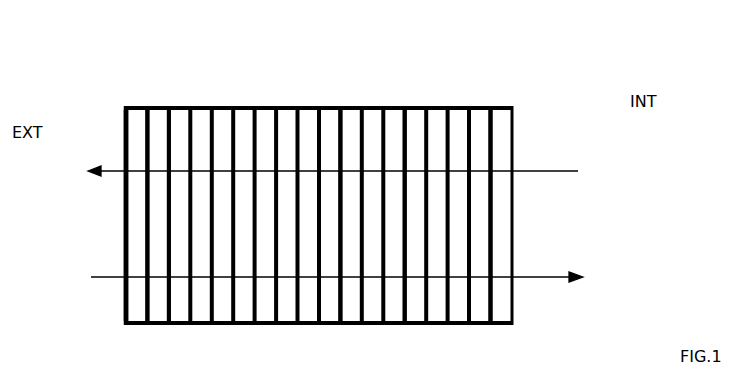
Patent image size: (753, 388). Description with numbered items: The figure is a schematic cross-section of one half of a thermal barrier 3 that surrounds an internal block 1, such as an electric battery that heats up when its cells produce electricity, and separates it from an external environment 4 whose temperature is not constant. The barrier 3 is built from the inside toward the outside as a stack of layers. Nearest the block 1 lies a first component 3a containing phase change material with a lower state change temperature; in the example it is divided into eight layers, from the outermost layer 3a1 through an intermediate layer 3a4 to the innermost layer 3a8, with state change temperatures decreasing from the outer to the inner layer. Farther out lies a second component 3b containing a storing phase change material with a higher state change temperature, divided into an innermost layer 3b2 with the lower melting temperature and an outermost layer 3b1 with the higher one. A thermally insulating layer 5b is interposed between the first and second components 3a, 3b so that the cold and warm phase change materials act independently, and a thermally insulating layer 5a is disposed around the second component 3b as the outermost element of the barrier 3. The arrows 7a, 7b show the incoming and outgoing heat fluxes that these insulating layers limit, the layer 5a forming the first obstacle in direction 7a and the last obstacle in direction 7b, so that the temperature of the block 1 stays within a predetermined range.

The thermal barrier 3 is at (513, 63).
The first component 3a is at (345, 336).
The second component 3b is at (316, 334).
The outermost layer of first component 3a1 is at (347, 143).
The intermediate layer of first component 3a4 is at (416, 143).
The innermost layer of first component 3a8 is at (500, 125).
The outermost layer of second component 3b1 is at (152, 125).
The innermost layer of second component 3b2 is at (181, 135).
The thermally insulating layer 5a is at (137, 300).
The thermally insulating layer 5b is at (330, 310).
The heat flux arrow 7a is at (527, 279).
The heat flux arrow 7b is at (553, 170).
The external environment 4 is at (37, 222).
The internal block 1 is at (568, 222).